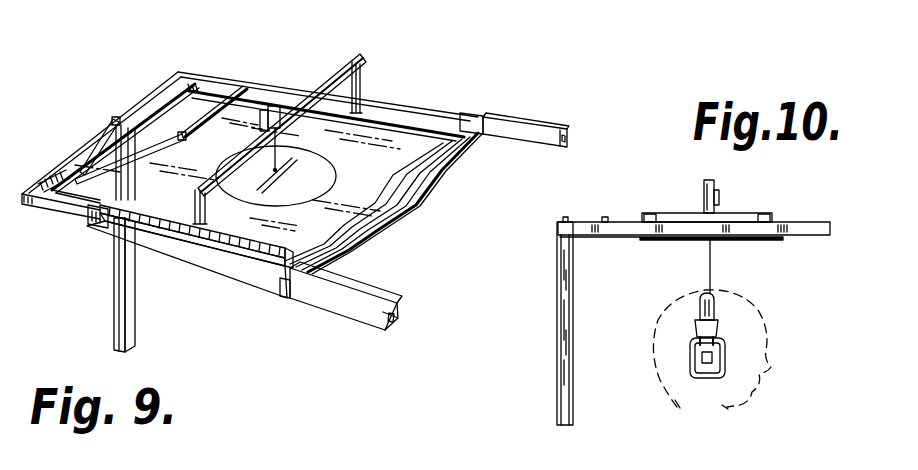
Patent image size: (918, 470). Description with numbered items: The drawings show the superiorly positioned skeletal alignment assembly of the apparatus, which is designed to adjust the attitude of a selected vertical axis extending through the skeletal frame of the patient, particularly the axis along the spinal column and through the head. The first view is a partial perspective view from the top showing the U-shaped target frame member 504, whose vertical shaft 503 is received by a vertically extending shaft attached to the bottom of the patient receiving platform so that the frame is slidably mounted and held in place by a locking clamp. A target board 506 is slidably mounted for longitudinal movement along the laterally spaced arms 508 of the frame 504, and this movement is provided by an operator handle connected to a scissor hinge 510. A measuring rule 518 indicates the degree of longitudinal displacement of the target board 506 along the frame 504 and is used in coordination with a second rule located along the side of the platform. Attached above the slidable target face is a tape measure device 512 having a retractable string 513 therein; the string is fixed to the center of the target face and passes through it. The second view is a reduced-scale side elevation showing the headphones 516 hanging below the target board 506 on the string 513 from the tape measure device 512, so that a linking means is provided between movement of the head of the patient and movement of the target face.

In FIG. 9, the vertical shaft 503 is at (136, 334).
In FIG. 10, the vertical shaft 503 is at (557, 299).
In FIG. 9, the U-shaped target frame member 504 is at (274, 60).
In FIG. 10, the target board 506 is at (640, 243).
In FIG. 9, the laterally spaced arms 508 is at (423, 102).
In FIG. 9, the scissor hinge 510 is at (105, 125).
In FIG. 9, the tape measure device 512 is at (286, 80).
In FIG. 10, the tape measure device 512 is at (703, 180).
In FIG. 9, the retractable string 513 is at (300, 153).
In FIG. 10, the retractable string 513 is at (712, 262).
In FIG. 10, the headphones 516 is at (725, 346).
In FIG. 9, the measuring rule 518 is at (234, 258).